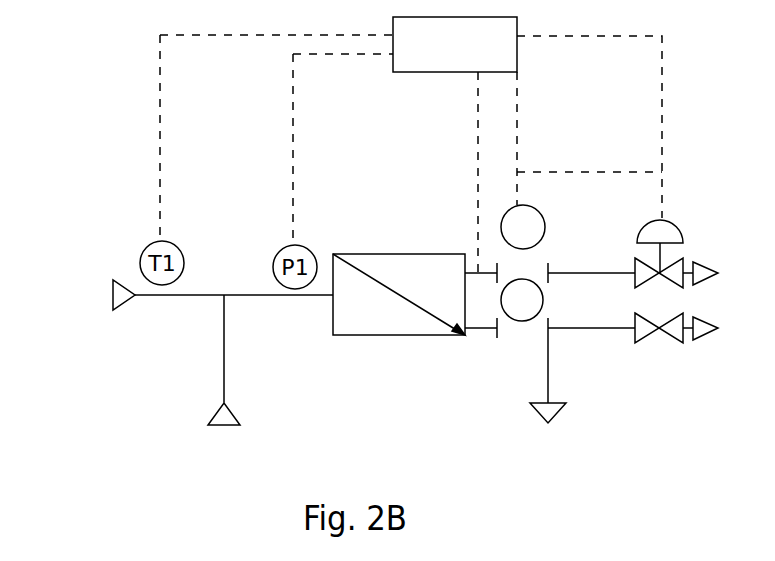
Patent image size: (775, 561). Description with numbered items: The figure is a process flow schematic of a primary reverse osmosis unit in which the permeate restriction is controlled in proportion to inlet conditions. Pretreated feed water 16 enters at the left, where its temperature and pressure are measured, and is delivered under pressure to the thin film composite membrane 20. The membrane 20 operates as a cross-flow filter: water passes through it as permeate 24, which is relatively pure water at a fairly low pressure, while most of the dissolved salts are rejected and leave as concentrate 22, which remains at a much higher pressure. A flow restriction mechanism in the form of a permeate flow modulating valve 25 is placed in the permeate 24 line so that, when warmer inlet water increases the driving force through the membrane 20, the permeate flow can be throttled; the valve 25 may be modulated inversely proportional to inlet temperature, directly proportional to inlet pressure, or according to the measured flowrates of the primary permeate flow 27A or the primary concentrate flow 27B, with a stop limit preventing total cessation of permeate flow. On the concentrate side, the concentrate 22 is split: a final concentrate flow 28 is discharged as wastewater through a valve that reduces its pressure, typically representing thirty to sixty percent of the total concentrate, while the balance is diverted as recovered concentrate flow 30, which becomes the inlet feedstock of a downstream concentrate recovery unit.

The feed water inlet 16 is at (197, 295).
The thin film composite membrane 20 is at (399, 277).
The concentrate 22 is at (481, 300).
The permeate 24 is at (695, 274).
The permeate flow modulating valve 25 is at (693, 245).
The primary permeate flow 27A is at (497, 213).
The primary concentrate flow 27B is at (513, 337).
The final concentrate flow 28 is at (695, 330).
The recovered concentrate flow 30 is at (582, 389).